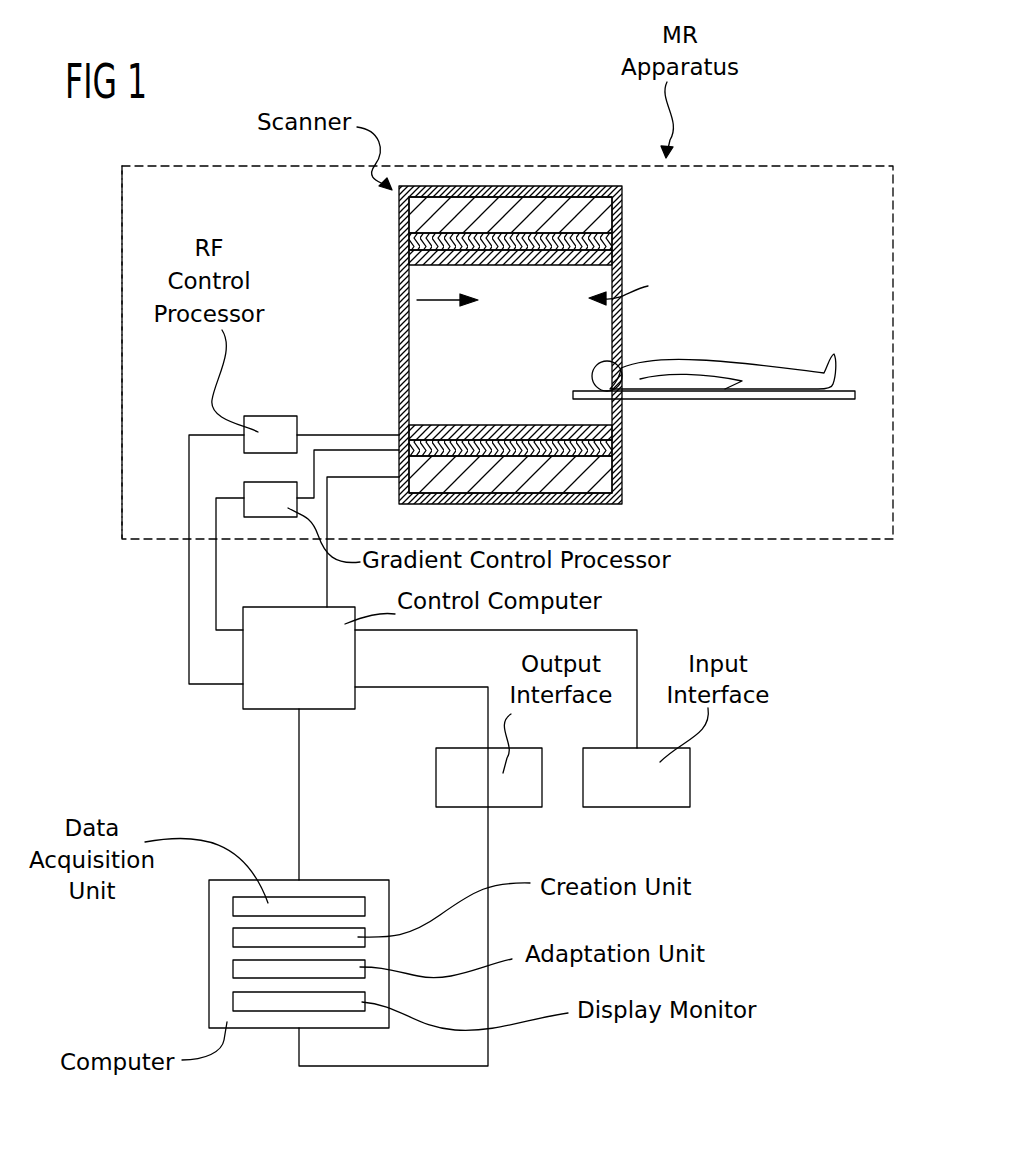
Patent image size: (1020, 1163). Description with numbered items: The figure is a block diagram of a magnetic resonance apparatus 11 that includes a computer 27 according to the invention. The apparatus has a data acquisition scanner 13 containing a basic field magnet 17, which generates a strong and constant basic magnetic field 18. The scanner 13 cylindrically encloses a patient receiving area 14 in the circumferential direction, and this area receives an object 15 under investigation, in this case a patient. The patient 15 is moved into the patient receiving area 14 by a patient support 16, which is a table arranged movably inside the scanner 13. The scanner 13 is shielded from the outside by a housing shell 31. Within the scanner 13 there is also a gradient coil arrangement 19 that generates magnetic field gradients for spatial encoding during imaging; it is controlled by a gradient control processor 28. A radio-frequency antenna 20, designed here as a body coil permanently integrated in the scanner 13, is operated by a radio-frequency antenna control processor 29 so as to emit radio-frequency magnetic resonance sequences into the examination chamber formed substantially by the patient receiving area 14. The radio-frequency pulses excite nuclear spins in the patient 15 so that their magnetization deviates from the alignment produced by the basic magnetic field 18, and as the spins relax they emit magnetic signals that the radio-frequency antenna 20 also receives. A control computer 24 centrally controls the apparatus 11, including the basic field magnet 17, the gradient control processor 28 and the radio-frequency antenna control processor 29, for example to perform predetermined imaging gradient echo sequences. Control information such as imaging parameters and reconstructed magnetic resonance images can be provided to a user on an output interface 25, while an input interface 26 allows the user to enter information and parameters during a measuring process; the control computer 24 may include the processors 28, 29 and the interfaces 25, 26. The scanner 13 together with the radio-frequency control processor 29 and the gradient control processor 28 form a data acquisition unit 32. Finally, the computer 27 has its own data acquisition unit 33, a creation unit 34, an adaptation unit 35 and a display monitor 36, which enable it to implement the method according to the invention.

The magnetic resonance apparatus 11 is at (783, 157).
The data acquisition scanner 13 is at (494, 312).
The patient receiving area 14 is at (632, 287).
The object under investigation 15 is at (797, 372).
The patient support 16 is at (828, 400).
The basic field magnet 17 is at (620, 217).
The basic magnetic field 18 is at (440, 302).
The gradient coil arrangement 19 is at (400, 239).
The radio-frequency antenna 20 is at (400, 262).
The control computer 24 is at (265, 712).
The output interface 25 is at (436, 776).
The input interface 26 is at (690, 773).
The computer 27 is at (270, 991).
The gradient control processor 28 is at (270, 518).
The radio-frequency antenna control processor 29 is at (273, 416).
The housing shell 31 is at (564, 185).
The data acquisition unit 32 is at (122, 328).
The data acquisition unit 33 is at (233, 906).
The creation unit 34 is at (233, 937).
The adaptation unit 35 is at (233, 970).
The display monitor 36 is at (233, 1002).